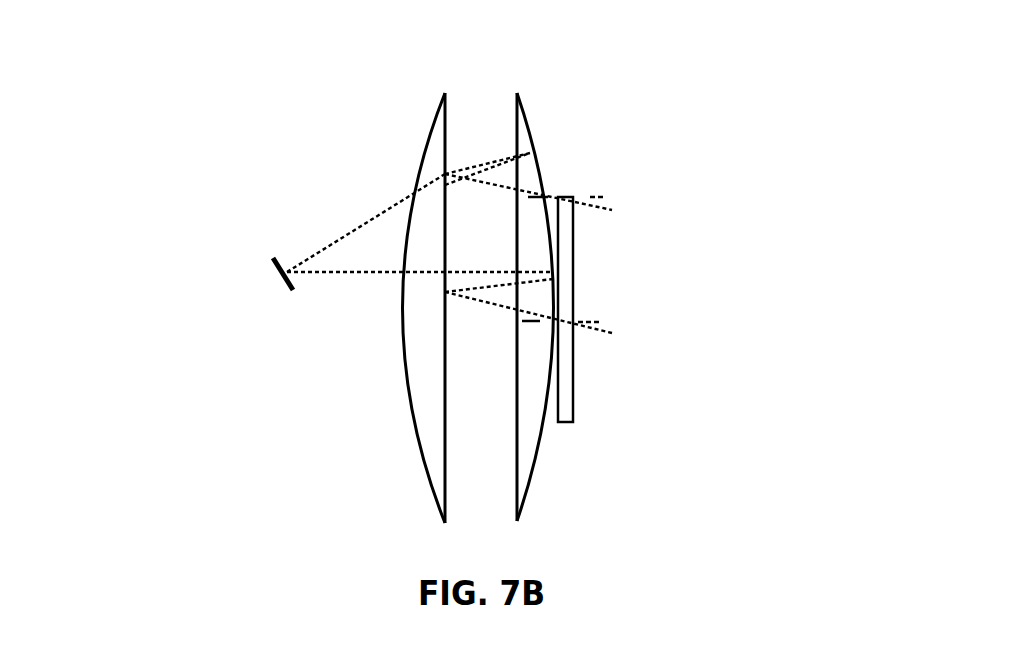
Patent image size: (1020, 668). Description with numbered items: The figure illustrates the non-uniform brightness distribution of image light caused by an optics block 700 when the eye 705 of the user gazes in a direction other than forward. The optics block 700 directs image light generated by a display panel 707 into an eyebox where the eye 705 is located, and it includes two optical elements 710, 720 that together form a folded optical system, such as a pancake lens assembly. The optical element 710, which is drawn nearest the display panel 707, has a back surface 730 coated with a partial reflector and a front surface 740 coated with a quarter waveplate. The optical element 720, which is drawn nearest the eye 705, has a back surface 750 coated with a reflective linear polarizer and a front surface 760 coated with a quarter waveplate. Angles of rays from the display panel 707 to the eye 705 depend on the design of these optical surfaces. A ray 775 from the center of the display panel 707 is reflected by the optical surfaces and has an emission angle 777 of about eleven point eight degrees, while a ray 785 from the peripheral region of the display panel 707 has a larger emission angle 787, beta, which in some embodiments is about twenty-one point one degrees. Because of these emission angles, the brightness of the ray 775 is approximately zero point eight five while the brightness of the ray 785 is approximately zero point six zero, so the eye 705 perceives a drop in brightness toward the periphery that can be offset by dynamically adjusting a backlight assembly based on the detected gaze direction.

The optics block 700 is at (495, 69).
The optical element 720 is at (433, 137).
The optical element 710 is at (526, 138).
The display panel 707 is at (573, 240).
The eye 705 is at (282, 281).
The ray 785 is at (343, 240).
The ray 775 is at (360, 273).
The emission angle 787 is at (610, 208).
The emission angle 777 is at (617, 329).
The front surface 760 is at (413, 425).
The back surface 750 is at (447, 480).
The back surface 730 is at (543, 437).
The front surface 740 is at (518, 467).